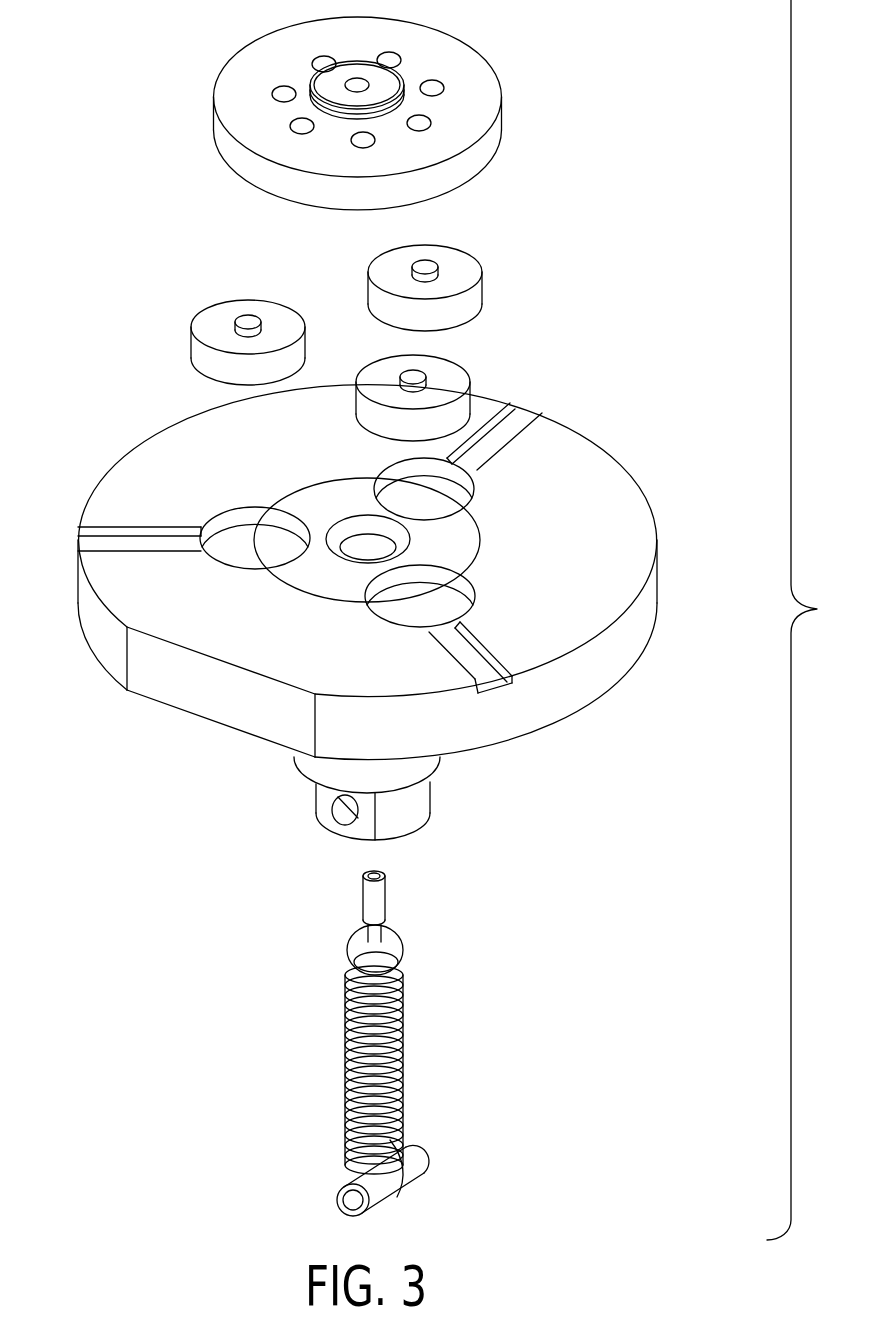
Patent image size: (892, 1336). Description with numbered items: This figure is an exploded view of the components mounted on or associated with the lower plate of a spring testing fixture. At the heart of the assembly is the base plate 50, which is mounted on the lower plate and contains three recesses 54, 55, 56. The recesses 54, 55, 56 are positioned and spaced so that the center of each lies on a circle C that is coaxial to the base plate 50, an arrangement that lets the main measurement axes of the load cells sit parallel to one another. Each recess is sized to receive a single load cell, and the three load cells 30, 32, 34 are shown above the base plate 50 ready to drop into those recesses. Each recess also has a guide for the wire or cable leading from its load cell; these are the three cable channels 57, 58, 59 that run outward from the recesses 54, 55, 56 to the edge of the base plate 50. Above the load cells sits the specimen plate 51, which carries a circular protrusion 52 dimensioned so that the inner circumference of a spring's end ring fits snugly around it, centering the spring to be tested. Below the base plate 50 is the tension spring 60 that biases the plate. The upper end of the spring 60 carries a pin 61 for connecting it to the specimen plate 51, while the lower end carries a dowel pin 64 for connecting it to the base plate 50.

The load cell 30 is at (213, 328).
The load cell 32 is at (465, 275).
The load cell 34 is at (440, 367).
The base plate 50 is at (633, 545).
The specimen plate 51 is at (483, 113).
The protrusion 52 is at (400, 75).
The recess 54 is at (242, 555).
The recess 55 is at (470, 497).
The recess 56 is at (412, 622).
The cable channel 57 is at (140, 542).
The cable channel 58 is at (518, 423).
The cable channel 59 is at (492, 682).
The tension spring 60 is at (382, 1080).
The pin 61 is at (375, 898).
The dowel pin 64 is at (412, 1158).
The circle C is at (482, 543).